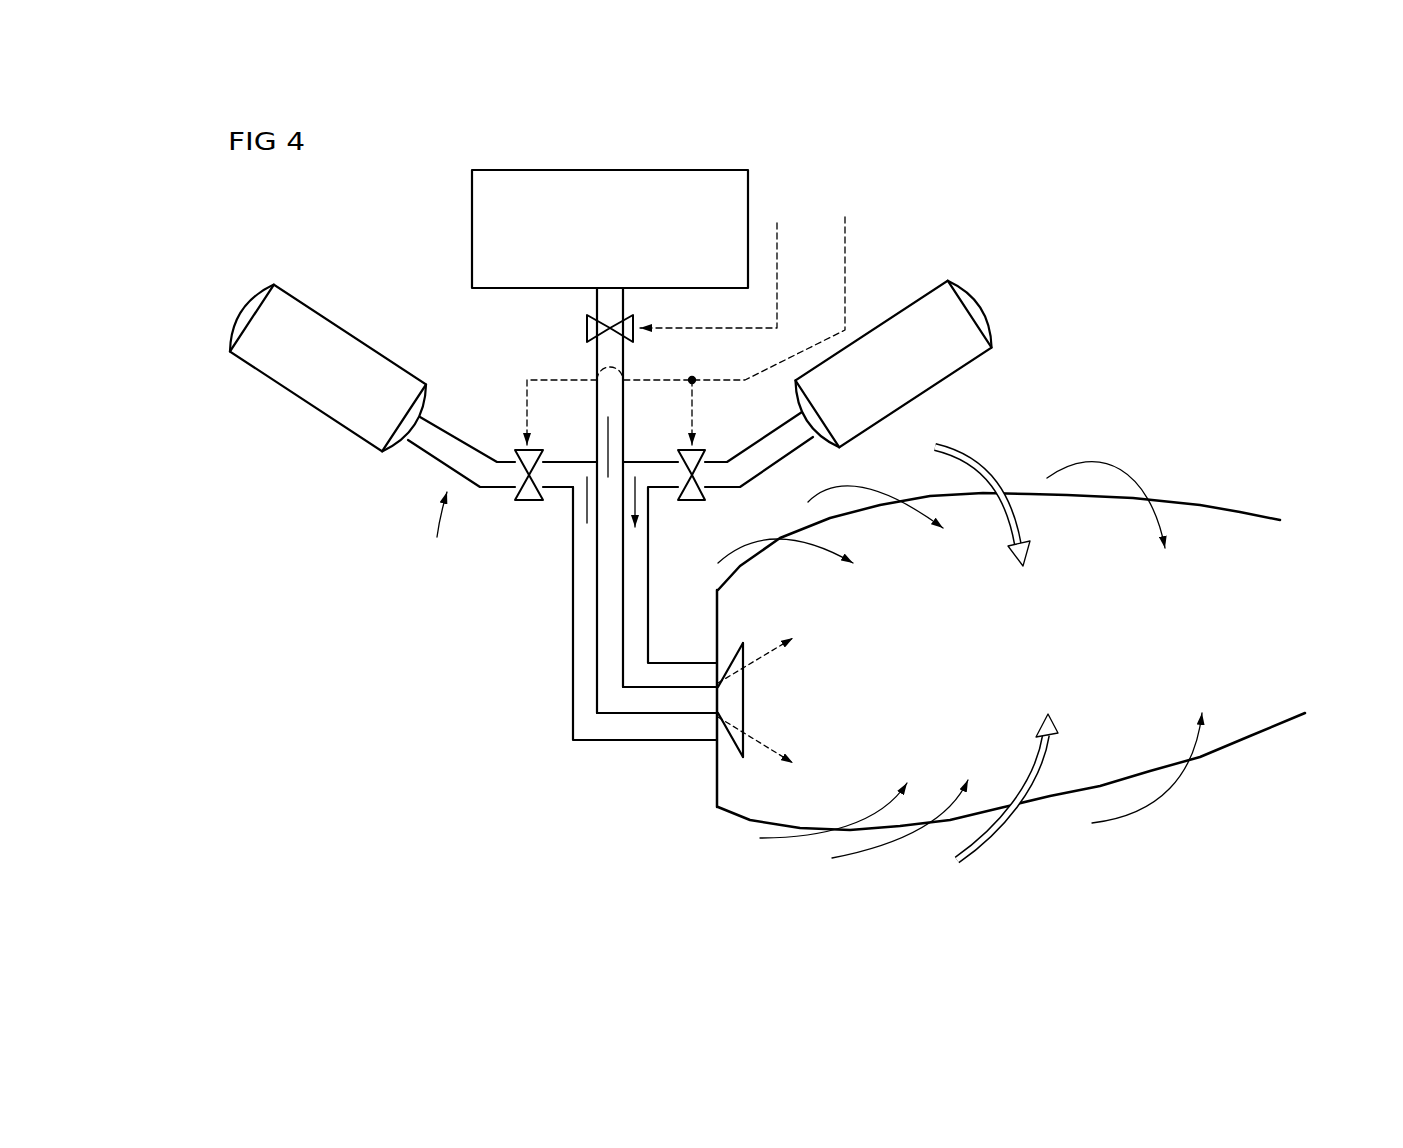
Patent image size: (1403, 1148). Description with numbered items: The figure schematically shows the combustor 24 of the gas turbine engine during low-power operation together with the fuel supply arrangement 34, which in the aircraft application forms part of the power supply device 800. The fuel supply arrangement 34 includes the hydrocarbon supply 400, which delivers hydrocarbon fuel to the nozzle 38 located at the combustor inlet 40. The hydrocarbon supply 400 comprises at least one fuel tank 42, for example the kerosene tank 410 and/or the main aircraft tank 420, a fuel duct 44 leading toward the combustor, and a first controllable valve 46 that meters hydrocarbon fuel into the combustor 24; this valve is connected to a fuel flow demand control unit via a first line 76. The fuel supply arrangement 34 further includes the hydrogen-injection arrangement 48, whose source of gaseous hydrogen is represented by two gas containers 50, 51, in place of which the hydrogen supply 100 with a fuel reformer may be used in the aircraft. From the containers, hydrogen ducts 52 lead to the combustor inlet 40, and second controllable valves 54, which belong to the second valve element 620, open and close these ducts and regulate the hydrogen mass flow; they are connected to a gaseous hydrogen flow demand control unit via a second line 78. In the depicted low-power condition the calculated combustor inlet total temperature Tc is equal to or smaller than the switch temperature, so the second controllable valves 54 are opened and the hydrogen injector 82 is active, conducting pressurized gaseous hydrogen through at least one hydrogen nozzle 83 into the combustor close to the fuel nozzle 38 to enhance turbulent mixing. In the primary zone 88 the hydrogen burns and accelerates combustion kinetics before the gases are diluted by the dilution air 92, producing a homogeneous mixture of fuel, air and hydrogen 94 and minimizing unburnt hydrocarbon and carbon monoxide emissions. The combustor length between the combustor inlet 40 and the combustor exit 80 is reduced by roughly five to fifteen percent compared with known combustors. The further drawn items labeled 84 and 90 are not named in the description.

The combustor 24 is at (1060, 834).
The fuel supply arrangement 34 is at (434, 672).
The nozzle 38 is at (740, 698).
The combustor inlet 40 is at (717, 768).
The fuel tank 42 is at (598, 178).
The fuel duct 44 is at (603, 403).
The first controllable valve 46 is at (587, 330).
The hydrogen-injection arrangement 48 is at (493, 569).
The gas container 50 is at (353, 348).
The gas container 51 is at (907, 318).
The hydrogen duct 52 is at (590, 592).
The second controllable valve 54 is at (528, 503).
The first line 76 is at (777, 243).
The second line 78 is at (848, 238).
The combustor exit 80 is at (1283, 620).
The hydrogen injector 82 is at (573, 692).
The hydrogen nozzle 83 is at (720, 668).
The fuel passage 84 is at (610, 707).
The primary zone 88 is at (909, 690).
The air flow 90 is at (807, 545).
The dilution air 92 is at (993, 478).
The homogeneous mixture of fuel, air and hydrogen 94 is at (781, 648).
The hydrogen supply 100 is at (298, 424).
The hydrocarbon supply 400 is at (757, 200).
The kerosene tank 410 is at (745, 162).
The main aircraft tank 420 is at (653, 203).
The second valve element 620 is at (760, 496).
The power supply device 800 is at (387, 757).
The calculated combustor inlet total temperature Tc is at (672, 760).